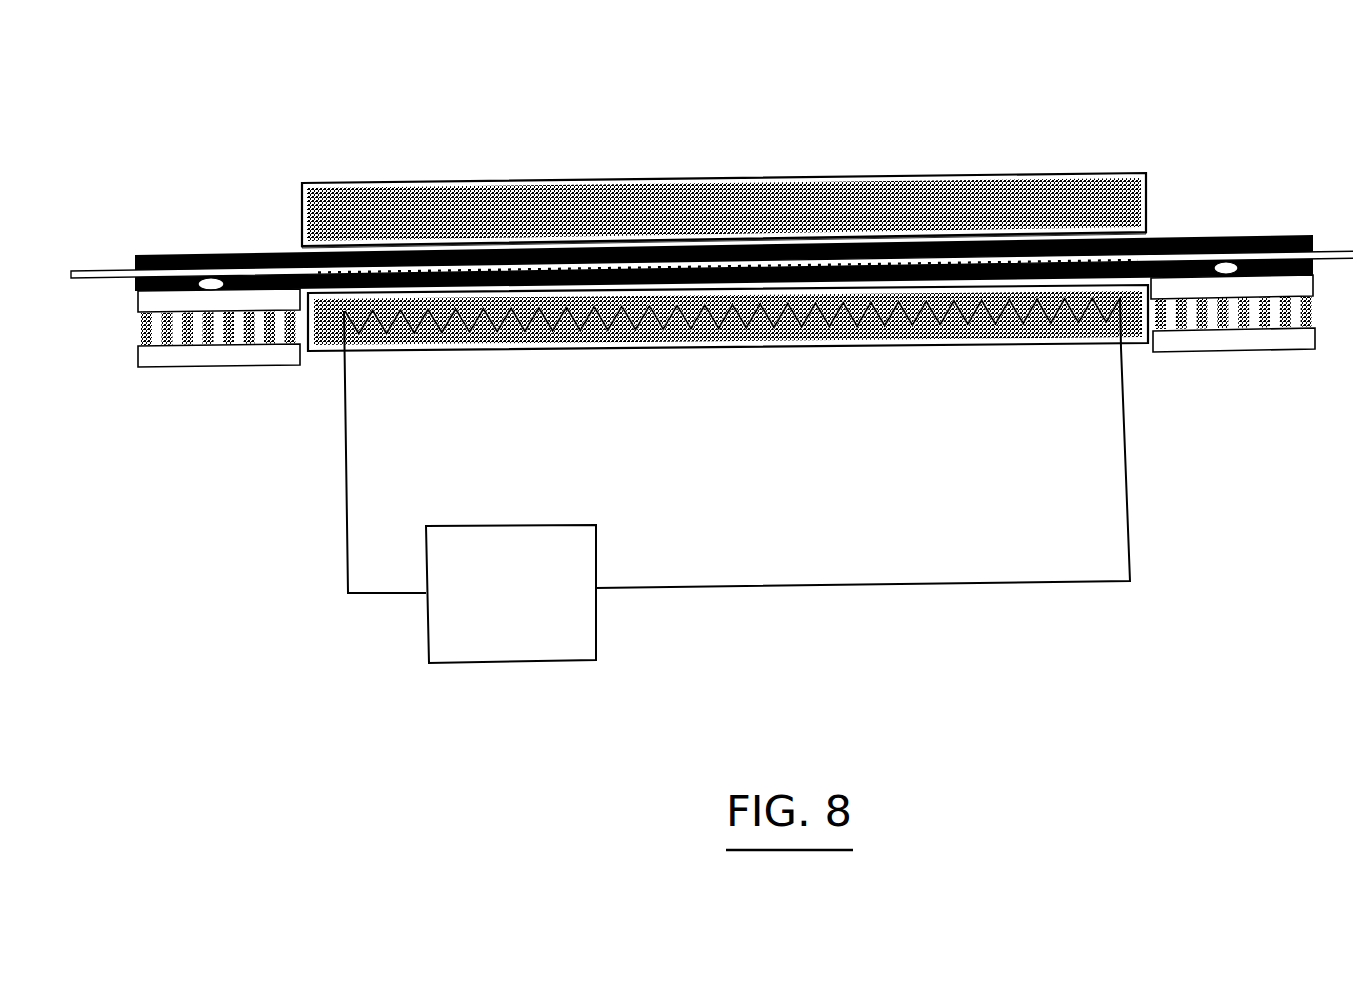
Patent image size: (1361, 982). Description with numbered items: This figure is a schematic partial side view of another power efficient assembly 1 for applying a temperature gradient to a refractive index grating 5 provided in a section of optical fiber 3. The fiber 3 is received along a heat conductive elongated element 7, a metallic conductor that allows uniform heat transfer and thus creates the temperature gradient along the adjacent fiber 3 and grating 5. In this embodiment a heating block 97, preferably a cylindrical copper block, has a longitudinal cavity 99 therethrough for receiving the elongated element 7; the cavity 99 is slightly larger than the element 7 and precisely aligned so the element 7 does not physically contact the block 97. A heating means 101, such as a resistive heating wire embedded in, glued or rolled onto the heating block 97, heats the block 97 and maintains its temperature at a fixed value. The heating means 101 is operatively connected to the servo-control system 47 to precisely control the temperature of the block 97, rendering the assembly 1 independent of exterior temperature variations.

The power efficient assembly 1 is at (794, 102).
The optical fiber 3 is at (95, 271).
The refractive index grating 5 is at (527, 280).
The heat conductive elongated element 7 is at (1173, 227).
The servo-control system 47 is at (418, 633).
The heating block 97 is at (452, 180).
The longitudinal cavity 99 is at (295, 240).
The heating means 101 is at (1113, 373).